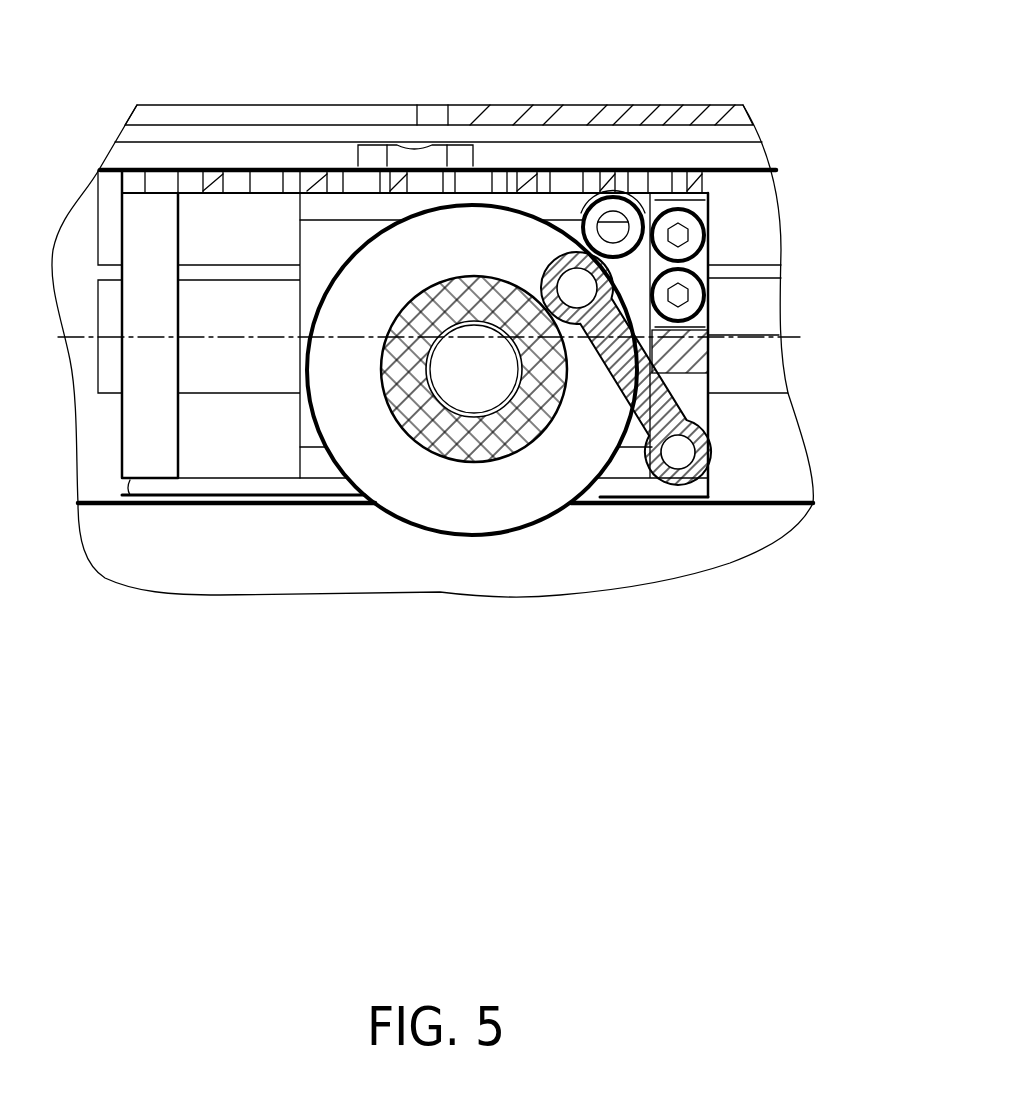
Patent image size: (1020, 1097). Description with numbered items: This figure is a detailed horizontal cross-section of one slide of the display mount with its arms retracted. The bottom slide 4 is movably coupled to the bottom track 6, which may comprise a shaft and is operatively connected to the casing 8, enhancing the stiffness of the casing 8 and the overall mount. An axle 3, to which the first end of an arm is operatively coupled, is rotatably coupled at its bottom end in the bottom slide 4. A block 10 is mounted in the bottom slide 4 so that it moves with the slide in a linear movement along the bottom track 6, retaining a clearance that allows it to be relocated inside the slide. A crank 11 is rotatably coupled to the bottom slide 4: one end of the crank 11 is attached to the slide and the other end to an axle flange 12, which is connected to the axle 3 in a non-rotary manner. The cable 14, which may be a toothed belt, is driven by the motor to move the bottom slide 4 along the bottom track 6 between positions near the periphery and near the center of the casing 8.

The axle 3 is at (480, 369).
The bottom slide 4 is at (142, 447).
The bottom track 6 is at (210, 343).
The casing 8 is at (645, 115).
The block 10 is at (313, 465).
The crank 11 is at (657, 422).
The axle flange 12 is at (480, 502).
The cable 14 is at (275, 160).